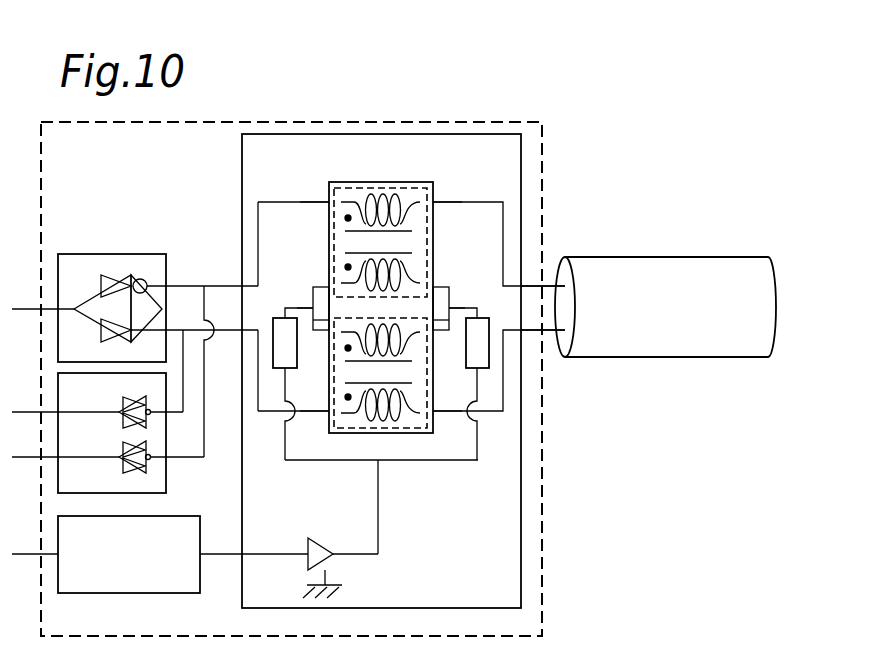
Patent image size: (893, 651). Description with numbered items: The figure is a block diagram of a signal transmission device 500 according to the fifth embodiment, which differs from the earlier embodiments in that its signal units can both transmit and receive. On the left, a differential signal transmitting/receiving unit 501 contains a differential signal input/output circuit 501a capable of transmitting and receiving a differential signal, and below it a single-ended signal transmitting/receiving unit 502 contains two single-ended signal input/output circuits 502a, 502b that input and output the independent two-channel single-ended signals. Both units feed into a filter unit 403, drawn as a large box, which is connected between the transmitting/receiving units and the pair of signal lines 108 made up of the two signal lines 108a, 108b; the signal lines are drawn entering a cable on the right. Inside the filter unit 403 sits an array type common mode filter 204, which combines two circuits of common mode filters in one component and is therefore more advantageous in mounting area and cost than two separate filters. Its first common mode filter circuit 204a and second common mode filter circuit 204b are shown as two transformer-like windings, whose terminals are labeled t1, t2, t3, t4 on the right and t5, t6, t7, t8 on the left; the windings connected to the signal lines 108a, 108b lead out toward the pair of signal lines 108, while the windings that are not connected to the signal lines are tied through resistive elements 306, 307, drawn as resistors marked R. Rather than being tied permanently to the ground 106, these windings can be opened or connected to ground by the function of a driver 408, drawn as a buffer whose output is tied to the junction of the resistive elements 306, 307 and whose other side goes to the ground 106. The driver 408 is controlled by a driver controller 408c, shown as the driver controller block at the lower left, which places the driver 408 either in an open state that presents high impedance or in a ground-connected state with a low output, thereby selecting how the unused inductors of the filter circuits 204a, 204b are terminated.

The signal transmission device 500 is at (478, 108).
The filter unit 403 is at (232, 178).
The array type common mode filter 204 is at (348, 326).
The first common mode filter circuit 204a is at (416, 435).
The second common mode filter circuit 204b is at (402, 186).
The differential signal transmitting/receiving unit 501 is at (89, 268).
The differential signal input/output circuit 501a is at (112, 284).
The single-ended signal transmitting/receiving unit 502 is at (127, 445).
The single-ended signal input/output circuit 502a is at (138, 400).
The single-ended signal input/output circuit 502b is at (138, 472).
The resistive element 306 is at (285, 318).
The resistive element 307 is at (477, 318).
The driver 408 is at (321, 537).
The driver controller 408c is at (172, 594).
The ground 106 is at (338, 593).
The pair of signal lines 108 is at (722, 358).
The signal line 108a is at (543, 332).
The signal line 108b is at (543, 283).
The terminal t1 is at (448, 400).
The terminal t2 is at (448, 340).
The terminal t3 is at (451, 282).
The terminal t4 is at (448, 217).
The terminal t5 is at (315, 217).
The terminal t6 is at (313, 282).
The terminal t7 is at (317, 340).
The terminal t8 is at (315, 400).